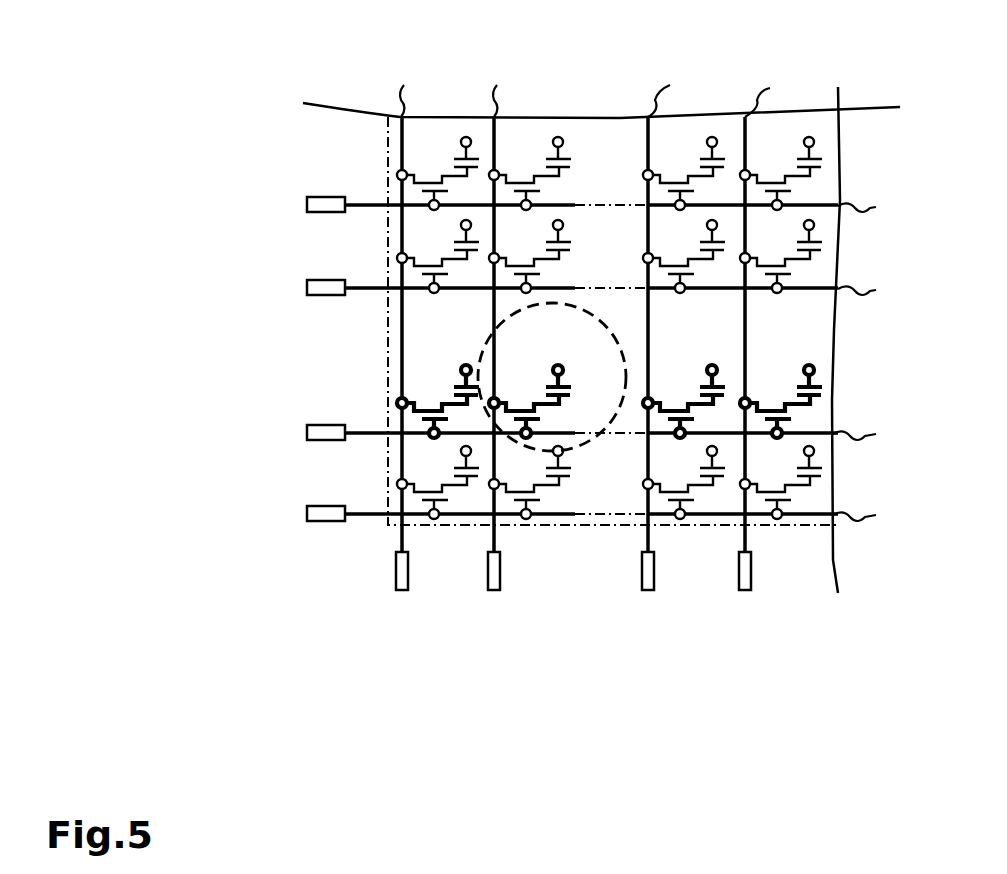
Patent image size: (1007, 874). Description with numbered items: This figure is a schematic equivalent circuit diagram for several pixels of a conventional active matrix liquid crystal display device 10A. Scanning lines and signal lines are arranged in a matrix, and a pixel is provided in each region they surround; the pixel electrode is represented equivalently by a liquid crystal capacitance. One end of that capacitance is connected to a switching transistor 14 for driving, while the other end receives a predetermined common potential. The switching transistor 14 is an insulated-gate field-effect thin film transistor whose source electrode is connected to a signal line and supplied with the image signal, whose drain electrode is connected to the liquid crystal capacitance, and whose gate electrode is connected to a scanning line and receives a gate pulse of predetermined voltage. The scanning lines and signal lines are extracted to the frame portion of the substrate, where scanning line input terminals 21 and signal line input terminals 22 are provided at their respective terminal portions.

The liquid crystal display device 10A is at (589, 336).
The switching transistor 14 is at (480, 330).
The scanning line input terminals 21 is at (293, 519).
The signal line input terminals 22 is at (752, 605).